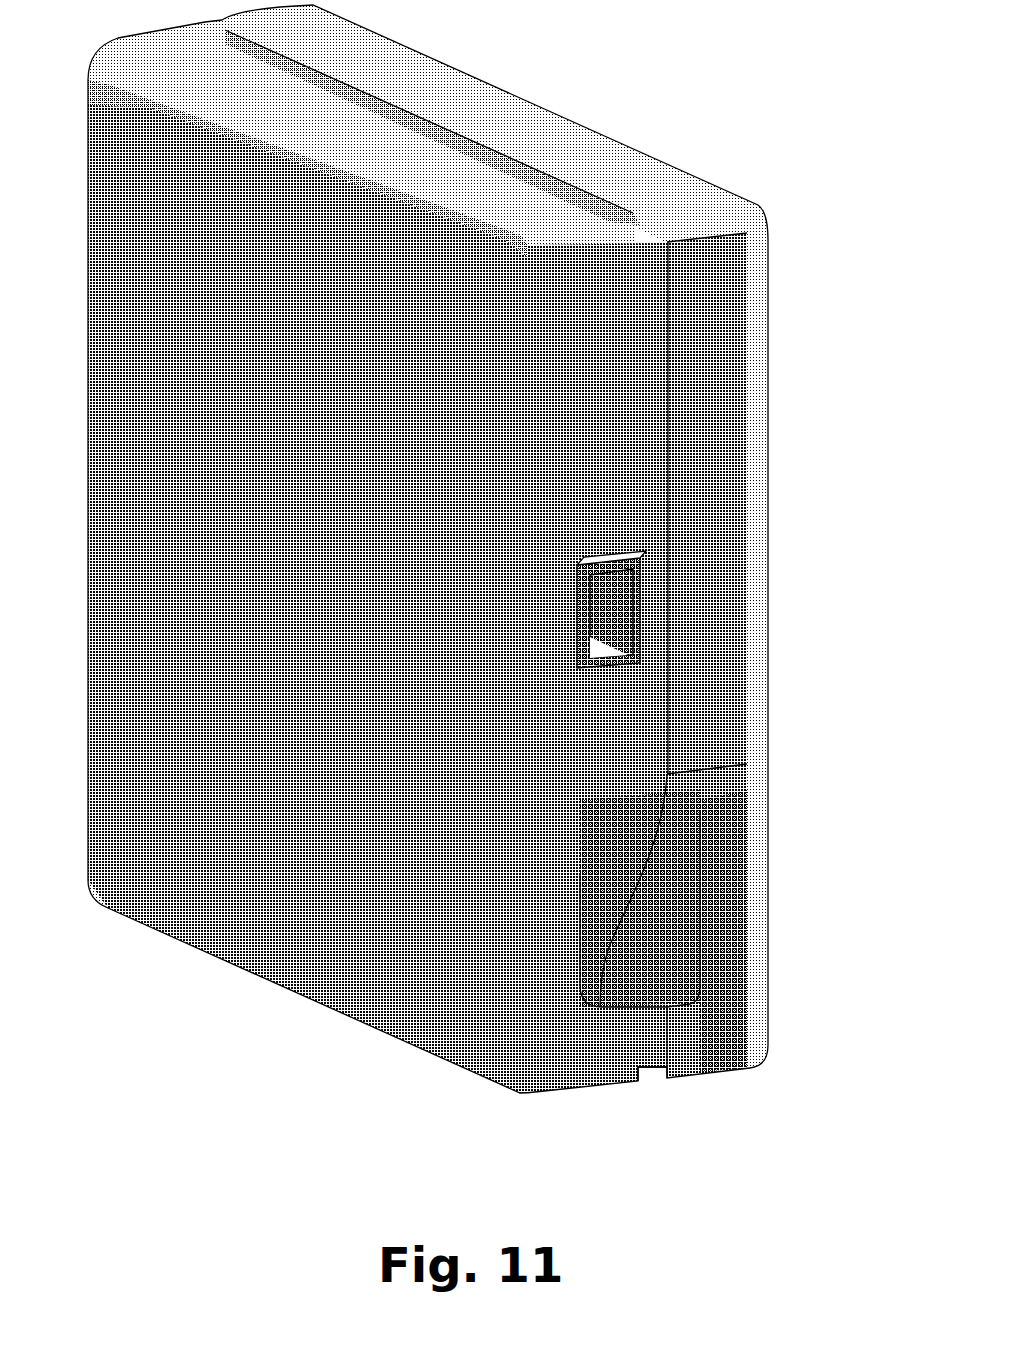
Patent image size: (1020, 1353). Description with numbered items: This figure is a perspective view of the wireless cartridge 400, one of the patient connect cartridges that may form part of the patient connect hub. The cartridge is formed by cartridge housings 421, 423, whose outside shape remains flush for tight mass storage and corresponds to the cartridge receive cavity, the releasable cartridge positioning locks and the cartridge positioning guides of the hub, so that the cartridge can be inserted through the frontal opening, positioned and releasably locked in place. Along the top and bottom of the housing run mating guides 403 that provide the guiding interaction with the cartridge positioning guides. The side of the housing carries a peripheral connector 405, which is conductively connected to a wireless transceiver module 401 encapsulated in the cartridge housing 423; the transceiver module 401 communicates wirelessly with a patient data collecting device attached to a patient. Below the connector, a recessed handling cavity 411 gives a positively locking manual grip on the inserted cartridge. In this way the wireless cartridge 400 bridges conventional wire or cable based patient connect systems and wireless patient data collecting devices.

The wireless cartridge 400 is at (157, 1125).
The wireless transceiver module 401 is at (738, 487).
The mating guide 403 is at (640, 228).
The peripheral connector 405 is at (620, 623).
The recessed handling cavity 411 is at (702, 960).
The cartridge housing 421 is at (198, 880).
The cartridge housing 423 is at (588, 155).